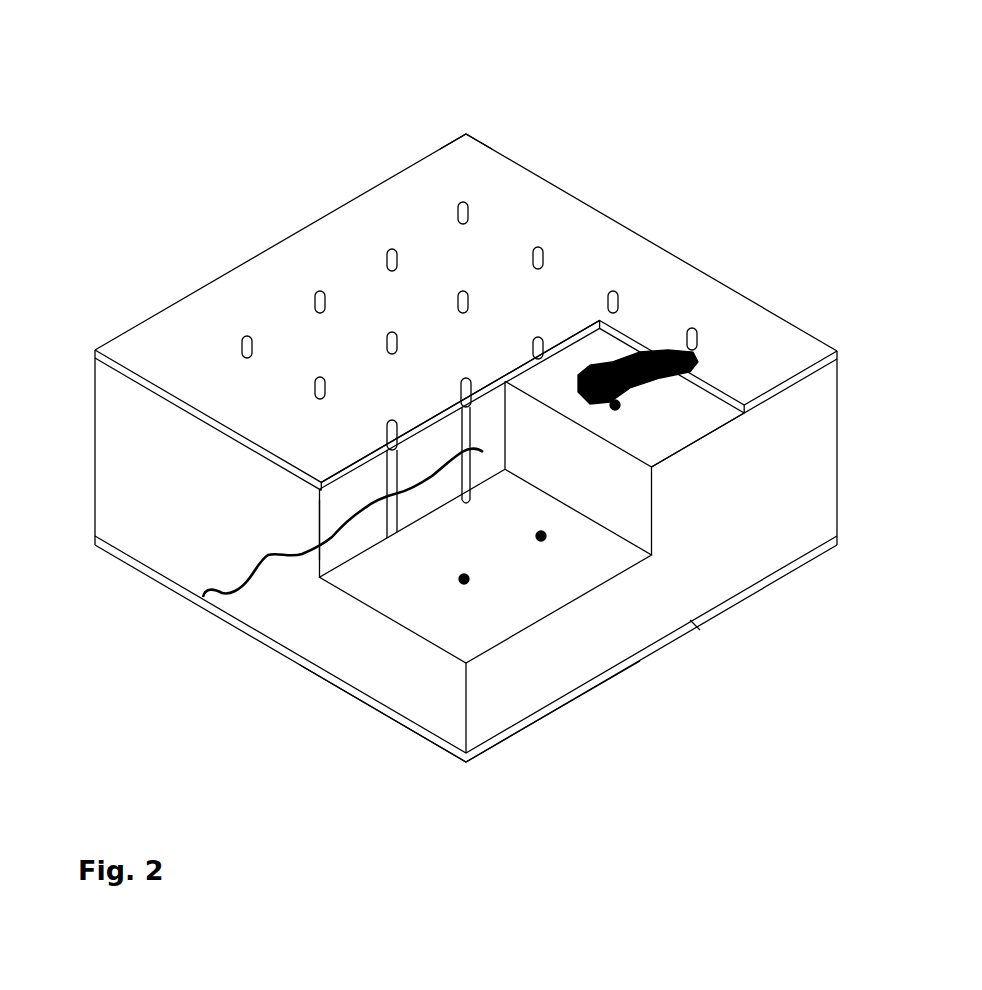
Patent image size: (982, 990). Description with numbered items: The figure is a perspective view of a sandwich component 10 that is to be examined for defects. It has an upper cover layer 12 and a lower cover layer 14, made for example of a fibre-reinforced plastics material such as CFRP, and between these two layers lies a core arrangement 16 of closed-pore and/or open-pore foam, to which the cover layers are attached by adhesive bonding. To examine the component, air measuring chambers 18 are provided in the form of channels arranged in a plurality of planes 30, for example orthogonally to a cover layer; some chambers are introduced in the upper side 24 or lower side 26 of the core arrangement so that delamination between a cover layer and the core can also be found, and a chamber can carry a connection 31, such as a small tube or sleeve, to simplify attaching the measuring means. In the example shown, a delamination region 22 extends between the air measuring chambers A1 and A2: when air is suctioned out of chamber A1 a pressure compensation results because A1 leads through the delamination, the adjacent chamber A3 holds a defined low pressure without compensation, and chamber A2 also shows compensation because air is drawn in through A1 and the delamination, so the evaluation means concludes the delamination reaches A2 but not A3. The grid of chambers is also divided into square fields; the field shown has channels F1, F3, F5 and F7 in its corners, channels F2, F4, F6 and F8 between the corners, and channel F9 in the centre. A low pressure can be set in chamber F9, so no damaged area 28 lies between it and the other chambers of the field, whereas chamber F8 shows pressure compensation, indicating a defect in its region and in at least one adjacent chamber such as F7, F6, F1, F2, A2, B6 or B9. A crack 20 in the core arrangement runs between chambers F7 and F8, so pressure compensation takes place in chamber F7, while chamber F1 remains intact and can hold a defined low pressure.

The sandwich component 10 is at (218, 183).
The upper cover layer 12 is at (457, 155).
The lower cover layer 14 is at (435, 750).
The core arrangement 16 is at (123, 499).
The air measuring chambers 18 is at (458, 202).
The crack 20 is at (423, 482).
The delamination region 22 is at (700, 350).
The upper side 24 is at (467, 133).
The lower side 26 is at (363, 705).
The damaged area 28 is at (638, 350).
The planes 30 is at (318, 485).
The connection 31 is at (467, 197).
The channel F1 is at (533, 340).
The channel F2 is at (461, 292).
The channel F3 is at (390, 250).
The channel F4 is at (318, 293).
The channel F5 is at (243, 340).
The channel F6 is at (315, 386).
The channel F7 is at (318, 517).
The channel F8 is at (460, 389).
The channel F9 is at (390, 335).
The air measuring chamber A1 is at (699, 333).
The air measuring chamber A2 is at (619, 398).
The air measuring chamber A3 is at (617, 293).
The air measuring chamber B6 is at (472, 585).
The air measuring chamber B9 is at (698, 653).